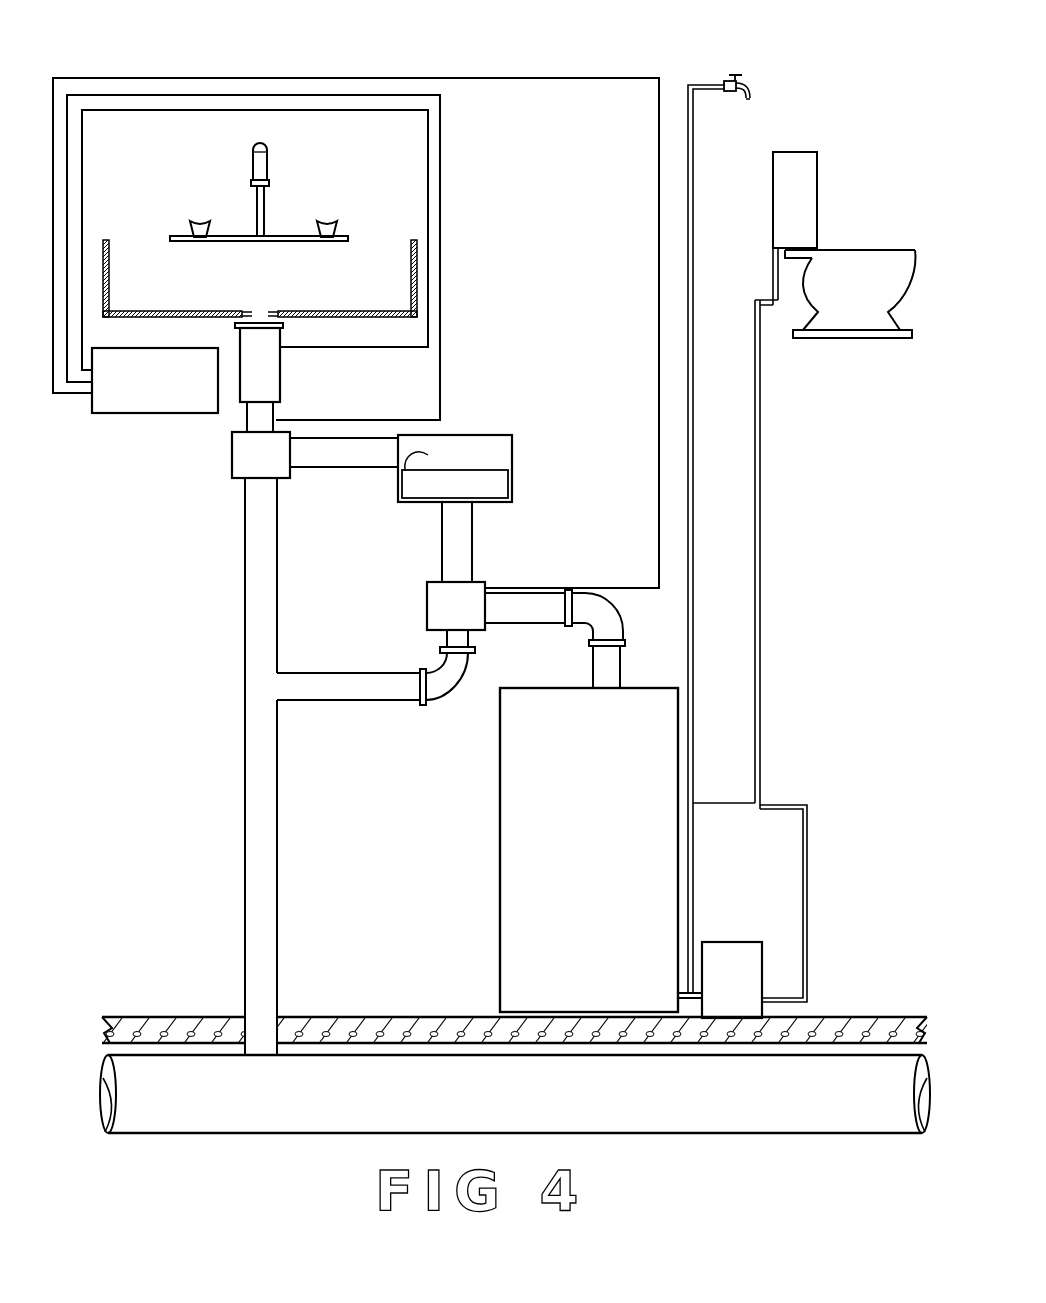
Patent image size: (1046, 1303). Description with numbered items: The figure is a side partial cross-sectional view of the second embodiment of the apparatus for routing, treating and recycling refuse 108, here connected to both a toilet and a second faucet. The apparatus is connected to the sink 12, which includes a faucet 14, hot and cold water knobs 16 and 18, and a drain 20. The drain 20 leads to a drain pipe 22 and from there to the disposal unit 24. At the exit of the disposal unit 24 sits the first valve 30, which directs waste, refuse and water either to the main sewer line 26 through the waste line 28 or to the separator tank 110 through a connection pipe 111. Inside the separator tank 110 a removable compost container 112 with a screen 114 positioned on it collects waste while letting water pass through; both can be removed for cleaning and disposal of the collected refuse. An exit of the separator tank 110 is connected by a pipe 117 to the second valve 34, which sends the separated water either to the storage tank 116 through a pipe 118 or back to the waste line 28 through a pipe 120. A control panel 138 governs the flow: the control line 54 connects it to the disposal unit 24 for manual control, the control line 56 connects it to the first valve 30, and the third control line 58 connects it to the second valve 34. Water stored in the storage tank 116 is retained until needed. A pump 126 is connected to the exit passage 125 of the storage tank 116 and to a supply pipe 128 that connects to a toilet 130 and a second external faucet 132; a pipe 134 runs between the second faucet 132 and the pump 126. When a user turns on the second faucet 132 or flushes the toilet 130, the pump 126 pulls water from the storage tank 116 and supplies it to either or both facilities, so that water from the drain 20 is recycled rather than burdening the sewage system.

The apparatus for routing, treating and recycling refuse 108 is at (676, 62).
The third control line 58 is at (398, 78).
The control line 56 is at (440, 118).
The control line 54 is at (82, 147).
The control panel 138 is at (203, 405).
The sink 12 is at (392, 258).
The faucet 14 is at (260, 160).
The hot water knob 16 is at (200, 219).
The cold water knob 18 is at (329, 219).
The drain 20 is at (257, 314).
The drain pipe 22 is at (273, 314).
The disposal unit 24 is at (247, 391).
The first valve 30 is at (248, 470).
The waste line 28 is at (246, 417).
The connection pipe 111 is at (312, 458).
The separator tank 110 is at (465, 463).
The removable compost container 112 is at (503, 488).
The screen 114 is at (432, 452).
The pipe 117 is at (442, 538).
The second valve 34 is at (443, 620).
The pipe 118 is at (525, 603).
The pipe 120 is at (351, 688).
The storage tank 116 is at (588, 878).
The exit passage 125 is at (690, 993).
The pump 126 is at (713, 1010).
The pipe between second faucet and pump 134 is at (689, 330).
The second faucet 132 is at (735, 100).
The supply pipe 128 is at (808, 885).
The toilet 130 is at (835, 296).
The main sewer line 26 is at (253, 1103).